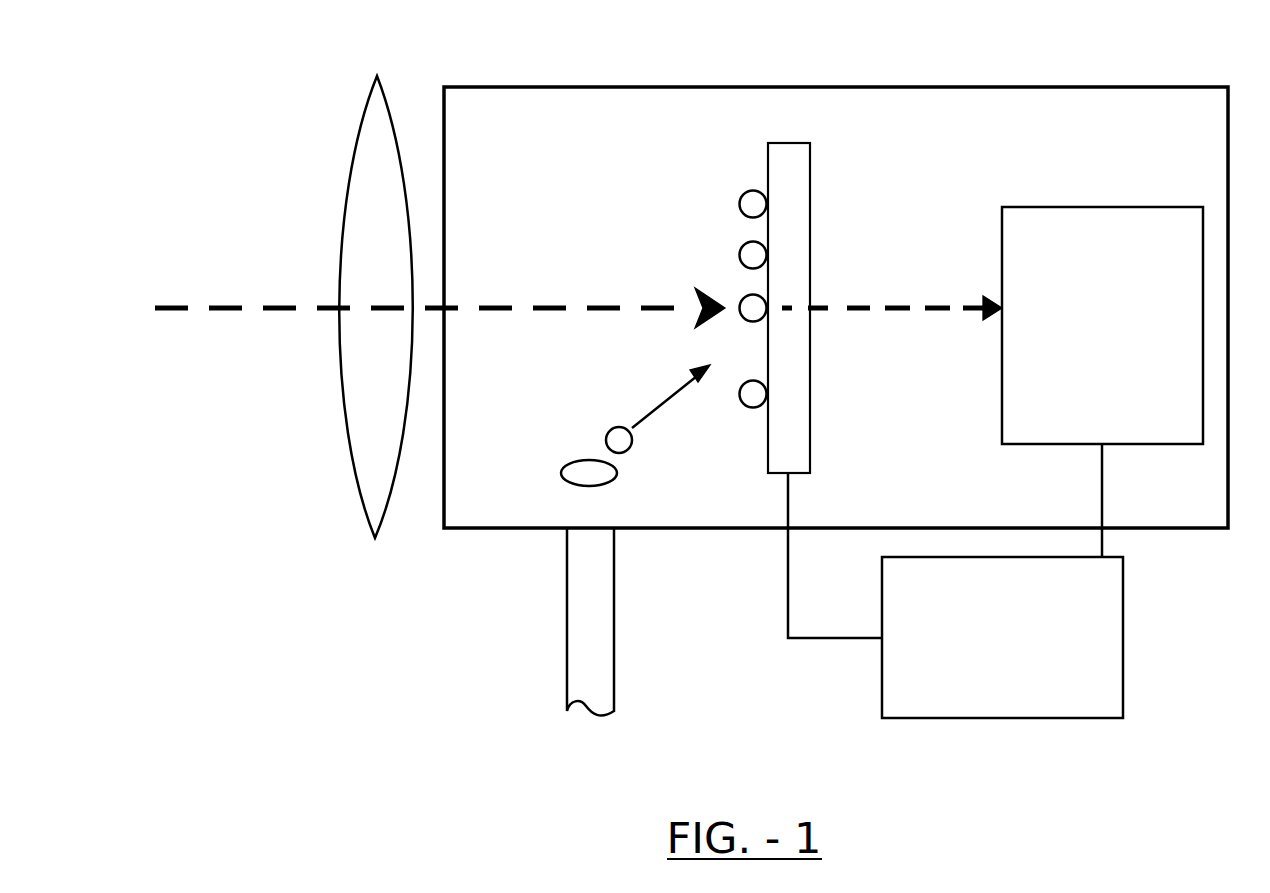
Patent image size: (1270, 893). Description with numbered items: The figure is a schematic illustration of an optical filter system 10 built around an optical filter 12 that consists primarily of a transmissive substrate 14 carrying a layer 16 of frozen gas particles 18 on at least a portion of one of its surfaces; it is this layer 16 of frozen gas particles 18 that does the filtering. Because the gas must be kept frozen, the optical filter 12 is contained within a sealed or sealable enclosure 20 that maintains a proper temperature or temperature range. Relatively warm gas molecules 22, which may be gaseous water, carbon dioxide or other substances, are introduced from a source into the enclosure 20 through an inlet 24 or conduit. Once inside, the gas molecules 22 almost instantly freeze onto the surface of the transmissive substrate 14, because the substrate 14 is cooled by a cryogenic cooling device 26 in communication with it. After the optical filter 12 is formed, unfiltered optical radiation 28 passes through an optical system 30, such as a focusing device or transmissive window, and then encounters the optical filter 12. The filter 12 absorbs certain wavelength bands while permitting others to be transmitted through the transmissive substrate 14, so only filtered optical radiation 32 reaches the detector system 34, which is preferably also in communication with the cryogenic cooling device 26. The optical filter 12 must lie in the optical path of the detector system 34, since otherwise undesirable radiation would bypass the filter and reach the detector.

The optical filter system 10 is at (893, 58).
The optical filter 12 is at (830, 140).
The transmissive substrate 14 is at (807, 225).
The layer of frozen gas particles 16 is at (726, 204).
The frozen gas particles 18 is at (738, 255).
The enclosure 20 is at (1070, 87).
The gas molecules 22 is at (606, 434).
The inlet 24 is at (567, 632).
The cryogenic cooling device 26 is at (1125, 630).
The unfiltered optical radiation 28 is at (285, 305).
The optical system 30 is at (350, 130).
The filtered optical radiation 32 is at (907, 305).
The detector system 34 is at (1121, 207).